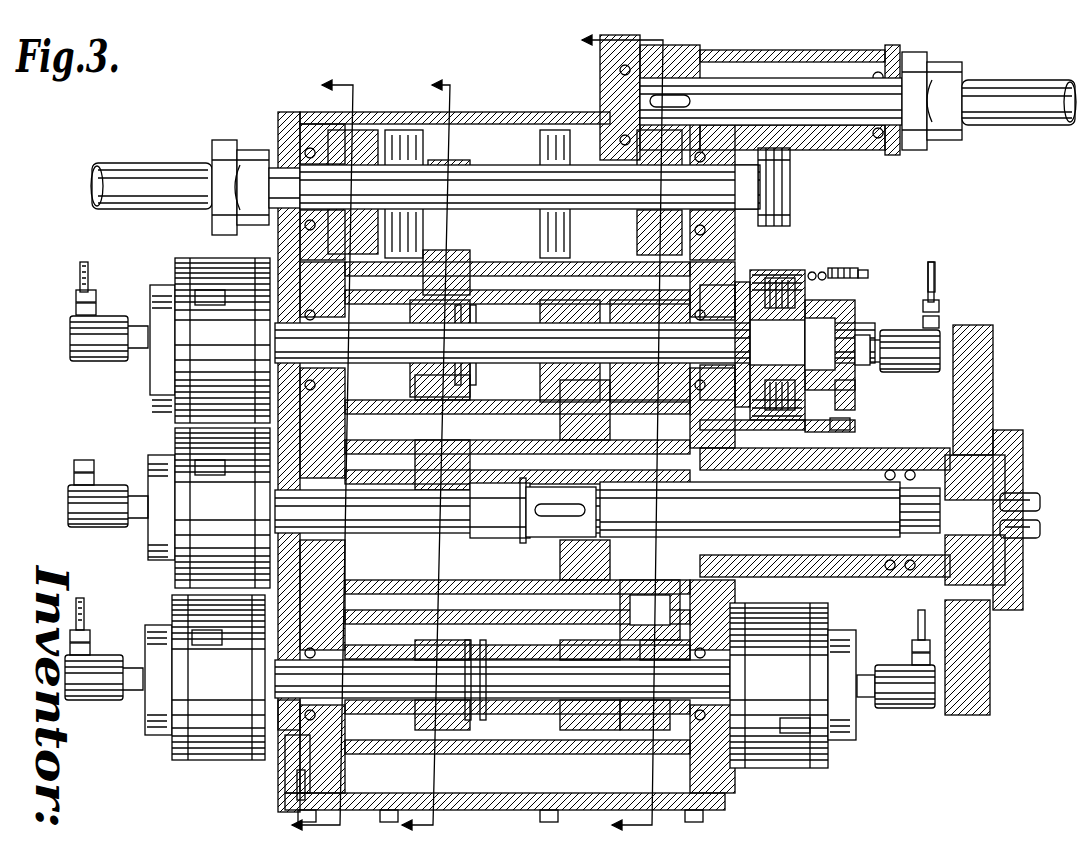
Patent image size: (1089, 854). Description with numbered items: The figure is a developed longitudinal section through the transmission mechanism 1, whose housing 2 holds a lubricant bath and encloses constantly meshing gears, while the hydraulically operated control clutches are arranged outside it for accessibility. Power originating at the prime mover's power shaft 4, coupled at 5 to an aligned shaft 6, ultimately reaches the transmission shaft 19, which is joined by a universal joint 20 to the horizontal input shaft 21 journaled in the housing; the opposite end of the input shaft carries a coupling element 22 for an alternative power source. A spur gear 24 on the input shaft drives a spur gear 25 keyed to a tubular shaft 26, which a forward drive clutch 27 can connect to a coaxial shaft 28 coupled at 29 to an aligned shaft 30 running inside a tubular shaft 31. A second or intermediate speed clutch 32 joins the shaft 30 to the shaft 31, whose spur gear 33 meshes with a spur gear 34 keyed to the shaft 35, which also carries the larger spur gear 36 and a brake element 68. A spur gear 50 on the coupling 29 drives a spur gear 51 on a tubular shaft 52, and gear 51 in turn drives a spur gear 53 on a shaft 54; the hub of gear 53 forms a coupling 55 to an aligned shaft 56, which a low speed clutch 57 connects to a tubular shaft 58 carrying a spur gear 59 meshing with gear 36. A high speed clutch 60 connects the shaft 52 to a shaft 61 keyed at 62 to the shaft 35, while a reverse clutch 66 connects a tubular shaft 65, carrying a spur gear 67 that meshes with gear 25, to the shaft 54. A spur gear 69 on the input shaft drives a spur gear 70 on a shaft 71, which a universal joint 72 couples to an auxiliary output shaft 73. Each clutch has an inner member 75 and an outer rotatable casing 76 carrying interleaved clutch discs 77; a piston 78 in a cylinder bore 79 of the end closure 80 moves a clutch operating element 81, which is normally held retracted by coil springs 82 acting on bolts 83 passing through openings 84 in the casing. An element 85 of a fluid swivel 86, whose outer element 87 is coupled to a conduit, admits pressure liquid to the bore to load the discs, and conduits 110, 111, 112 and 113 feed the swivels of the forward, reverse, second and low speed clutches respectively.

The transmission mechanism 1 is at (283, 112).
The housing 2 is at (505, 118).
The power shaft 4 is at (609, 433).
The coupling 5 is at (414, 456).
The shaft 6 is at (304, 456).
The transmission shaft 19 is at (120, 178).
The universal joint 20 is at (212, 160).
The input shaft 21 is at (278, 178).
The coupling element 22 is at (790, 180).
The spur gear 24 is at (360, 130).
The spur gear 25 is at (385, 252).
The tubular shaft 26 is at (315, 316).
The forward drive clutch 27 is at (215, 363).
The coaxial shaft 28 is at (448, 312).
The coupling 29 is at (472, 318).
The longitudinal shaft 30 is at (580, 325).
The tubular shaft 31 is at (630, 318).
The second or intermediate speed clutch 32 is at (812, 272).
The spur gear 33 is at (645, 300).
The spur gear 34 is at (660, 605).
The shaft 35 is at (848, 500).
The larger spur gear 36 is at (560, 412).
The spur gear 50 is at (455, 265).
The spur gear 51 is at (455, 470).
The tubular shaft 52 is at (448, 500).
The spur gear 53 is at (448, 740).
The shaft 54 is at (315, 672).
The coupling 55 is at (495, 655).
The shaft 56 is at (645, 720).
The first or low speed clutch 57 is at (785, 765).
The tubular shaft 58 is at (672, 720).
The spur gear 59 is at (600, 740).
The third or high speed clutch 60 is at (195, 510).
The shaft 61 is at (460, 515).
The key connection 62 is at (530, 530).
The tubular shaft 65 is at (290, 710).
The reverse clutch 66 is at (195, 680).
The spur gear 67 is at (298, 765).
The brake element 68 is at (995, 392).
The spur gear 69 is at (640, 228).
The spur gear 70 is at (680, 62).
The shaft 71 is at (797, 95).
The universal joint 72 is at (945, 150).
The output shaft 73 is at (1040, 125).
The inner member 75 is at (835, 425).
The outer rotatable casing 76 is at (760, 285).
The clutch discs 77 is at (780, 282).
The piston 78 is at (855, 318).
The cylinder bore 79 is at (855, 425).
The end closure 80 is at (855, 400).
The clutch operating element 81 is at (828, 272).
The coil springs 82 is at (858, 272).
The bolts 83 is at (868, 275).
The openings 84 is at (820, 270).
The swivel element 85 is at (938, 310).
The fluid swivel 86 is at (112, 325).
The outer swivel element 87 is at (940, 345).
The conduit 110 is at (80, 275).
The conduit 111 is at (84, 612).
The conduit 112 is at (936, 275).
The conduit 113 is at (918, 620).